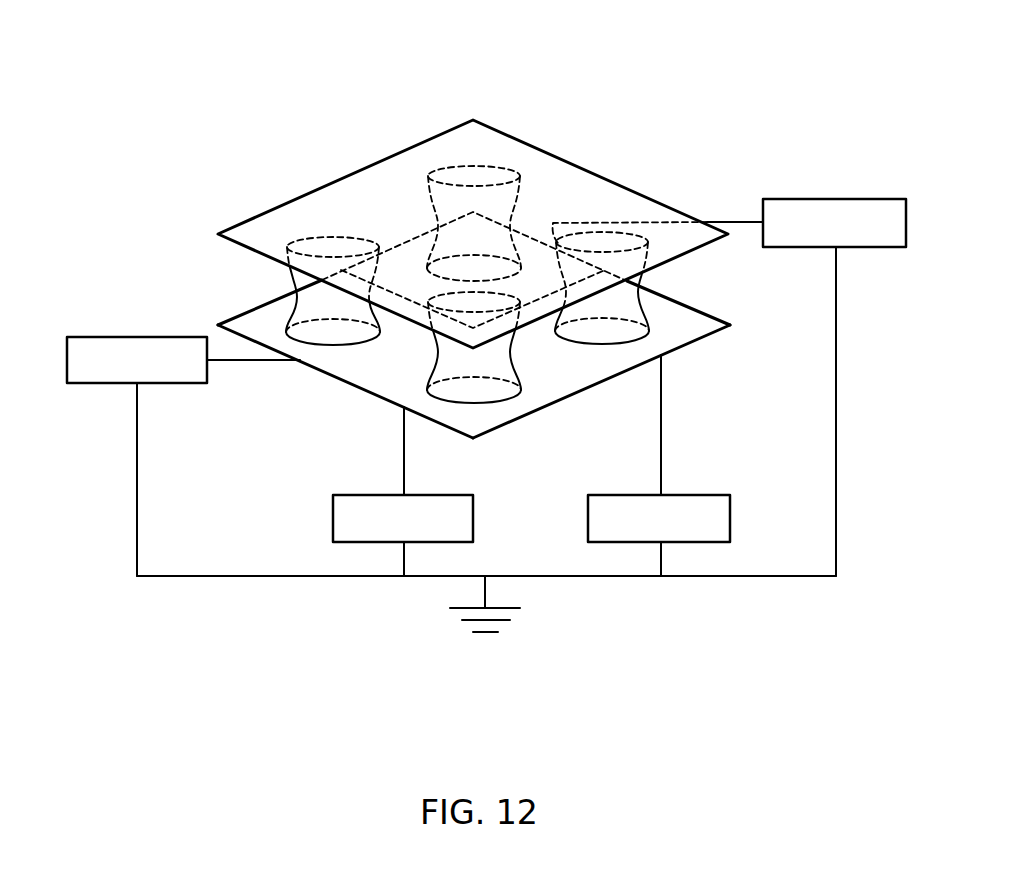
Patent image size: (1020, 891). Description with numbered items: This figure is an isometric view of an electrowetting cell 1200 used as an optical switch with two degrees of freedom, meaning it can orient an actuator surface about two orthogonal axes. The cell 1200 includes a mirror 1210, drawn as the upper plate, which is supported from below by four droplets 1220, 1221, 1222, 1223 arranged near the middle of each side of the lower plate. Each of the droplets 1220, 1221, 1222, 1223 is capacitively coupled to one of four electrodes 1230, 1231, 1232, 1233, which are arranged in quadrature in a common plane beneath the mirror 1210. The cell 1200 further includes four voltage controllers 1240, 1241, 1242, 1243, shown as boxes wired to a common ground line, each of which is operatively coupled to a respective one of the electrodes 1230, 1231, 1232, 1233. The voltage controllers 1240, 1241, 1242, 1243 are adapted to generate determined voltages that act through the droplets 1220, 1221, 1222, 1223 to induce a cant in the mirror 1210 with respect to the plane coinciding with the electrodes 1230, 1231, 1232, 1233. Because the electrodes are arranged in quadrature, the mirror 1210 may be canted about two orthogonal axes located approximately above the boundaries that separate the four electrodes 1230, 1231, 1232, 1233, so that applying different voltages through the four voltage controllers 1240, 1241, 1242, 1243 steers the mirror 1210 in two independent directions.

The electrowetting cell 1200 is at (707, 96).
The mirror 1210 is at (487, 143).
The droplet 1220 is at (497, 404).
The droplet 1221 is at (634, 280).
The droplet 1222 is at (520, 178).
The droplet 1223 is at (298, 278).
The electrode 1230 is at (370, 393).
The electrode 1231 is at (685, 347).
The electrode 1232 is at (417, 237).
The electrode 1233 is at (263, 306).
The voltage controller 1240 is at (366, 494).
The voltage controller 1241 is at (687, 494).
The voltage controller 1242 is at (777, 199).
The voltage controller 1243 is at (112, 384).